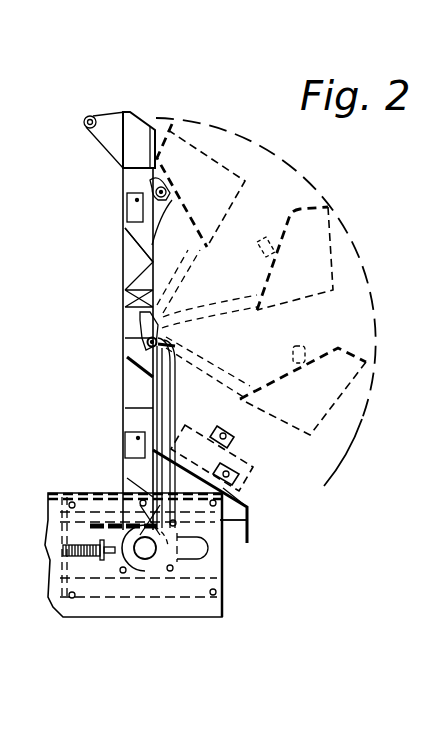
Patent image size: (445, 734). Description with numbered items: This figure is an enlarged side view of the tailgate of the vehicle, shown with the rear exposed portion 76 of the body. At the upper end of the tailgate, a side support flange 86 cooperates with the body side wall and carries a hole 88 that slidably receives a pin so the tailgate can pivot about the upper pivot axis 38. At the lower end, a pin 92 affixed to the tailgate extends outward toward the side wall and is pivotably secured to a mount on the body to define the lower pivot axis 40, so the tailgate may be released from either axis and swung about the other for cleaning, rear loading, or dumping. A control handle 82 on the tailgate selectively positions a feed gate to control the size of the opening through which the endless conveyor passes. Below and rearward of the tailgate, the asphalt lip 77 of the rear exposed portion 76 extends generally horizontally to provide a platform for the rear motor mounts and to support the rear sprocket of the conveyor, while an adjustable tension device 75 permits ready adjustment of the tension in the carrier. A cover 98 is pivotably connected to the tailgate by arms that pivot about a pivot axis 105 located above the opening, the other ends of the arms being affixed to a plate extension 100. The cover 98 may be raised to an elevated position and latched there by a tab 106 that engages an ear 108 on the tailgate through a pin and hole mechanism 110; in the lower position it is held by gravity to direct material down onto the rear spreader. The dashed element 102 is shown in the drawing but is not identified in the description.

The upper pivot axis 38 is at (84, 121).
The lower pivot axis 40 is at (222, 528).
The adjustable tension device 75 is at (85, 556).
The rear exposed portion 76 is at (195, 560).
The asphalt lip 77 is at (150, 478).
The control handle 82 is at (153, 419).
The side support flange 86 is at (116, 117).
The hole 88 is at (92, 118).
The pin 92 is at (152, 538).
The cover 98 is at (262, 520).
The plate extension 100 is at (250, 506).
The motor 102 is at (245, 474).
The pivot axis 105 is at (120, 341).
The tab 106 is at (152, 264).
The ear 108 is at (158, 186).
The pin and hole mechanism 110 is at (168, 200).